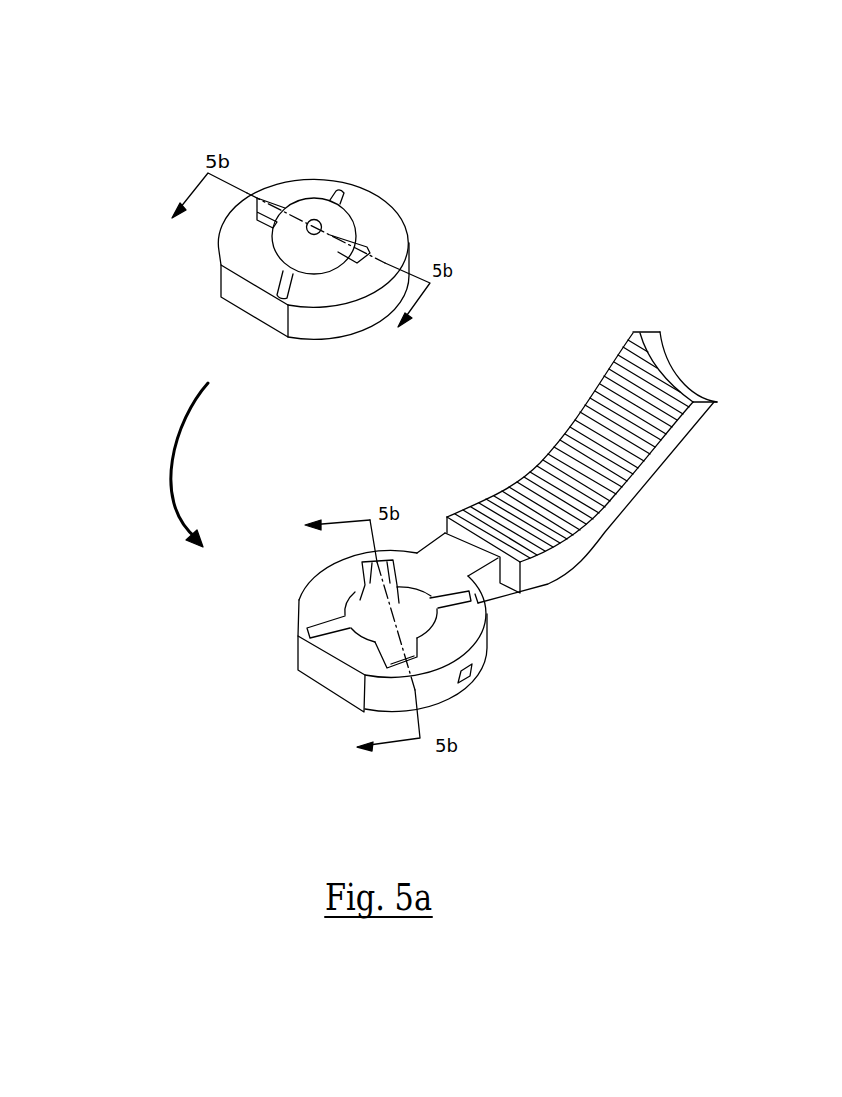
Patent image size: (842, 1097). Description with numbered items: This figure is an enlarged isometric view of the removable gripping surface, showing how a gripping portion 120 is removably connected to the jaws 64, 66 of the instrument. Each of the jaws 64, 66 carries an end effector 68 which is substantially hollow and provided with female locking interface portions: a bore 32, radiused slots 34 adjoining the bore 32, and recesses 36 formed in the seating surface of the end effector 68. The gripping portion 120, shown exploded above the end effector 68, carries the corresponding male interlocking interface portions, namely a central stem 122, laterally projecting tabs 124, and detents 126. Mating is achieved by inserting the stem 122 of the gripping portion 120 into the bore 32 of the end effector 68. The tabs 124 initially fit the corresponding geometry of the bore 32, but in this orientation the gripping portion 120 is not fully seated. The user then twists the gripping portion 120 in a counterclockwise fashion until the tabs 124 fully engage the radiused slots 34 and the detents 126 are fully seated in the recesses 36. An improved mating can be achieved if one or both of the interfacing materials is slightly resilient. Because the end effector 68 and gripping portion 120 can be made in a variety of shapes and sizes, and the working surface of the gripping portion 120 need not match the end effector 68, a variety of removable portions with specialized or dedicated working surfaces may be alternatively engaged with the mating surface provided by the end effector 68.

The gripping portion 120 is at (307, 178).
The stem 122 is at (322, 258).
The tabs 124 is at (272, 200).
The detents 126 is at (342, 193).
The bore 32 is at (391, 638).
The radiused slots 34 is at (382, 552).
The recesses 36 is at (307, 628).
The jaw 64 is at (578, 578).
The jaw 66 is at (618, 473).
The end effector 68 is at (435, 690).